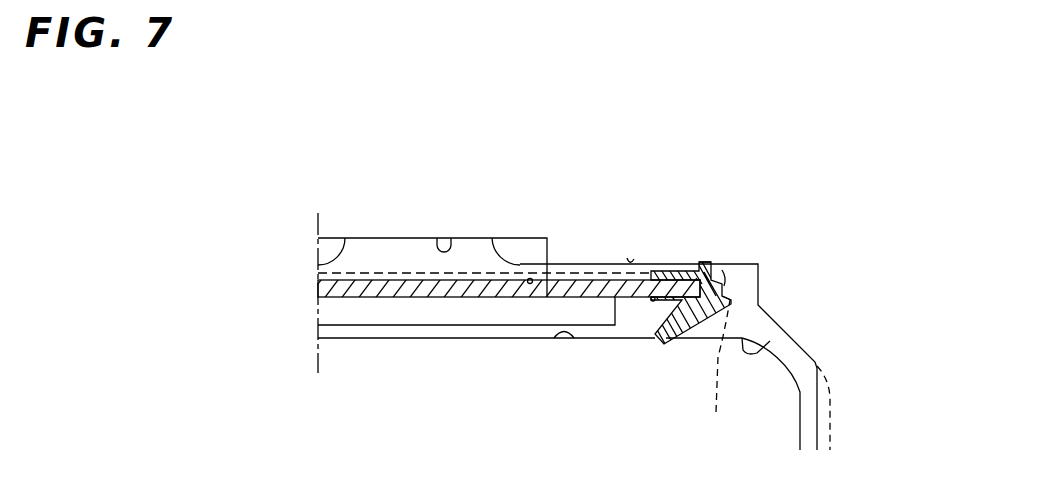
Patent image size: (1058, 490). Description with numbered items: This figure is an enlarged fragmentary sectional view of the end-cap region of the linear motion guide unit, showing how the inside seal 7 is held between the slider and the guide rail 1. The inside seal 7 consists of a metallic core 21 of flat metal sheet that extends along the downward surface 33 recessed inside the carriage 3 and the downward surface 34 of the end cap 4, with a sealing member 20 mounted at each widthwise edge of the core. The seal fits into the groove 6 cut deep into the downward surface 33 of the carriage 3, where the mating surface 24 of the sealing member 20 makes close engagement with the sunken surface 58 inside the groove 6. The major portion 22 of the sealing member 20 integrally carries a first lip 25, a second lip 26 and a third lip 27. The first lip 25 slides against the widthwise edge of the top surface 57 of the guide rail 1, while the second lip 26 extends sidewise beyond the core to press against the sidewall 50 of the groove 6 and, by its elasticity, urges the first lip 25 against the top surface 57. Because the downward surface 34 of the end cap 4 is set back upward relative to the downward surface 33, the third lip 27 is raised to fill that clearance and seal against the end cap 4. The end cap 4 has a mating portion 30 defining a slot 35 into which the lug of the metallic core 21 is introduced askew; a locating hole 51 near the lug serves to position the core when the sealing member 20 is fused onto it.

The guide rail 1 is at (608, 352).
The carriage 3 is at (745, 280).
The end cap 4 is at (584, 260).
The groove 6 is at (725, 266).
The inside seal 7 is at (484, 303).
The sealing member 20 is at (684, 338).
The metallic core 21 is at (407, 291).
The major portion 22 is at (700, 316).
The mating surface 24 is at (675, 268).
The first lip 25 is at (666, 343).
The second lip 26 is at (735, 300).
The third lip 27 is at (704, 263).
The mating portion 30 is at (397, 312).
The downward surface 33 is at (740, 313).
The downward surface 34 is at (630, 258).
The slot 35 is at (437, 238).
The sidewall 50 is at (721, 374).
The locating hole 51 is at (330, 262).
The top surface 57 is at (573, 342).
The sunken surface 58 is at (531, 277).